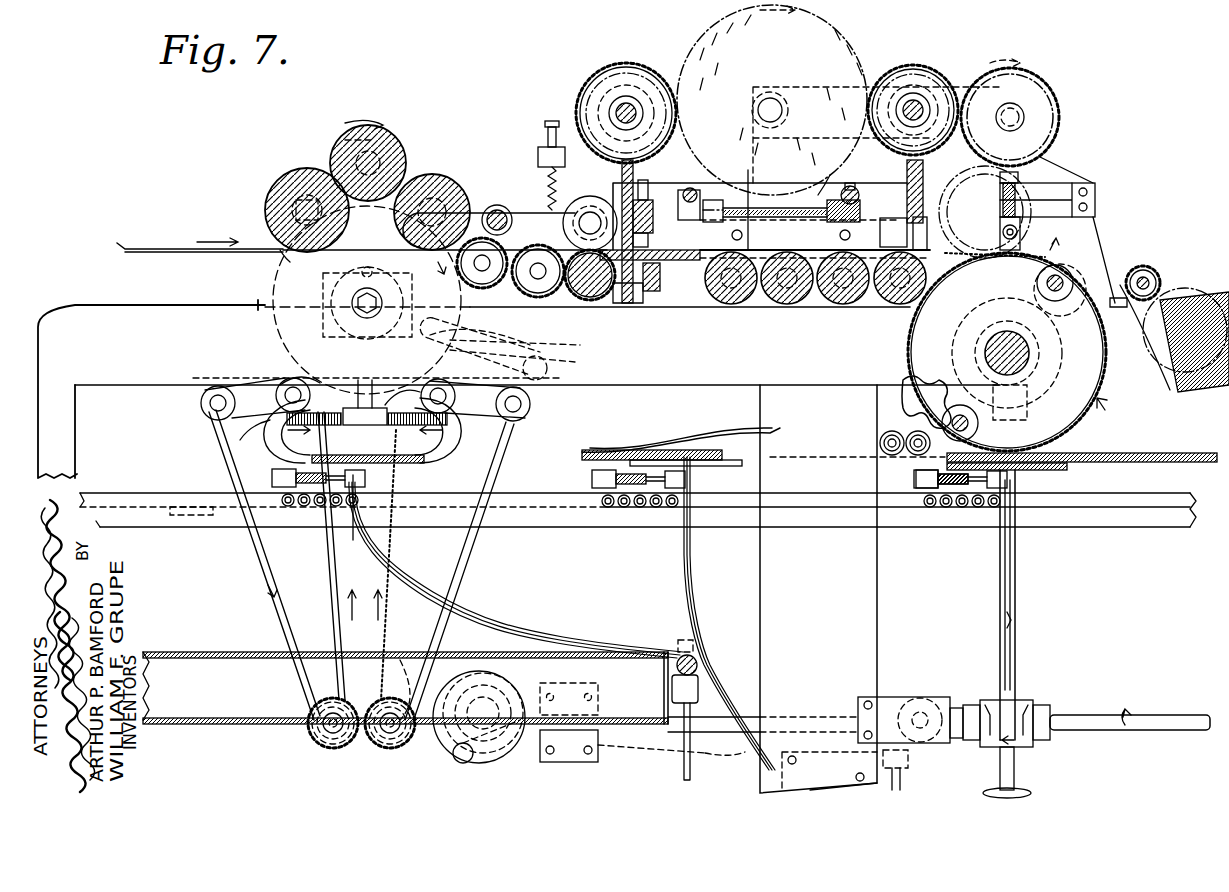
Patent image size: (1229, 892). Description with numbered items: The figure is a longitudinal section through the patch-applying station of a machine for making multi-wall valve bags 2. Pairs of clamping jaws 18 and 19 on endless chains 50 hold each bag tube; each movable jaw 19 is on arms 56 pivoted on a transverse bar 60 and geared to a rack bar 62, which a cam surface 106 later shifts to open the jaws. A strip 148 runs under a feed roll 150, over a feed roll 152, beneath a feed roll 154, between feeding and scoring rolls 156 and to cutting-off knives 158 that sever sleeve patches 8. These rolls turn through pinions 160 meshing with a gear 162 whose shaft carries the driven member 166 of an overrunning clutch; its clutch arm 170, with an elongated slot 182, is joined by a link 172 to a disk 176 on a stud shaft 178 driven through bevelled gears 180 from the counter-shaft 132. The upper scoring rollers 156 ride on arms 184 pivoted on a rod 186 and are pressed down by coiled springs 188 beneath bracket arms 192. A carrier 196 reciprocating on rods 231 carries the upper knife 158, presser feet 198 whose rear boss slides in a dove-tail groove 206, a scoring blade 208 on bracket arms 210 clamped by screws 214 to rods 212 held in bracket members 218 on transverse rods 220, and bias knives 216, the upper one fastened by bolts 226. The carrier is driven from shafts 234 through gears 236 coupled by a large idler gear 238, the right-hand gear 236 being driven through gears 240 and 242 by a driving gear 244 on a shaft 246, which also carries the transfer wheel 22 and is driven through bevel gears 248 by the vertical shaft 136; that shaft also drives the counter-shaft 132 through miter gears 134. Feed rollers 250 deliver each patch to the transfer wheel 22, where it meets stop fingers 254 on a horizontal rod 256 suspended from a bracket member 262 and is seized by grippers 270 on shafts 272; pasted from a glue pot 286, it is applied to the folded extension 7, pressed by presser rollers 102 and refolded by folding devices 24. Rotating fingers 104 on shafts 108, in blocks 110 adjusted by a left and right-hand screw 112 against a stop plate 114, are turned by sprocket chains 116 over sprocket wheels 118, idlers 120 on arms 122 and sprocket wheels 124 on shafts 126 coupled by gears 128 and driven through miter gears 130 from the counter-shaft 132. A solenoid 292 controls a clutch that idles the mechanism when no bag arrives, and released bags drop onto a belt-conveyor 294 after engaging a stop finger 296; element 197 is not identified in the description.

The bag 2 is at (570, 637).
The folded flap extension 7 is at (1045, 466).
The sleeve patch 8 is at (769, 253).
The clamping jaw 18 is at (355, 470).
The movable jaw 19 is at (354, 516).
The transfer wheel 22 is at (1100, 410).
The folding devices 24 is at (708, 440).
The endless chains 50 is at (1195, 532).
The arms 56 is at (975, 482).
The transverse bar 60 is at (950, 505).
The rack bar 62 is at (925, 497).
The presser rollers 102 is at (918, 456).
The rotating fingers 104 is at (360, 435).
The cam surface 106 is at (158, 494).
The shafts 108 is at (285, 385).
The blocks 110 is at (352, 412).
The left and right-hand screw 112 is at (240, 440).
The fixed stop plate 114 is at (352, 432).
The sprocket chains 116 is at (270, 604).
The sprocket wheel 118 is at (280, 390).
The idler 120 is at (205, 405).
The arm 122 is at (215, 420).
The sprocket wheel 124 is at (310, 745).
The shaft 126 is at (330, 740).
The gears 128 is at (372, 742).
The miter gears 130 is at (310, 650).
The counter-shaft 132 is at (1143, 722).
The miter gears 134 is at (1028, 752).
The vertical shaft 136 is at (1017, 674).
The strip 148 is at (117, 240).
The feed roll 150 is at (270, 171).
The feed roll 152 is at (347, 144).
The feed roll 154 is at (418, 150).
The feeding and scoring rolls 156 is at (598, 304).
The cutting-off knives 158 is at (660, 300).
The pinions 160 is at (265, 202).
The gear 162 is at (285, 256).
The driven member 166 is at (325, 276).
The clutch arm 170 is at (548, 365).
The link 172 is at (508, 587).
The disk 176 is at (535, 768).
The stud shaft 178 is at (525, 684).
The bevelled gears 180 is at (480, 760).
The elongated slot 182 is at (565, 380).
The arm 184 is at (545, 190).
The stationary rod 186 is at (497, 205).
The coiled spring 188 is at (552, 165).
The bracket arm 192 is at (565, 190).
The carrier 196 is at (794, 169).
The pulley 197 is at (588, 195).
The presser feet 198 is at (708, 302).
The dove-tail groove 206 is at (598, 162).
The scoring blade 208 is at (653, 231).
The bracket arms 210 is at (750, 205).
The rods 212 is at (808, 190).
The clamping screws 214 is at (710, 200).
The knives 216 is at (845, 305).
The bracket members 218 is at (692, 186).
The transverse rods 220 is at (684, 190).
The screws or bolts 226 is at (740, 235).
The rods 231 is at (920, 176).
The shafts 234 is at (632, 106).
The gears 236 is at (640, 65).
The large idler gear 238 is at (830, 80).
The gear 240 is at (1050, 96).
The gear 242 is at (980, 173).
The driving gear 244 is at (905, 388).
The shaft 246 is at (1022, 368).
The bevel gears 248 is at (968, 346).
The feed rollers 250 is at (790, 306).
The stop fingers 254 is at (1070, 240).
The horizontal rod 256 is at (1022, 232).
The bracket member 262 is at (1097, 203).
The grippers 270 is at (1062, 282).
The shaft 272 is at (1160, 300).
The glue pot 286 is at (1185, 430).
The solenoid 292 is at (942, 704).
The belt-conveyor 294 is at (195, 710).
The stop finger 296 is at (676, 640).